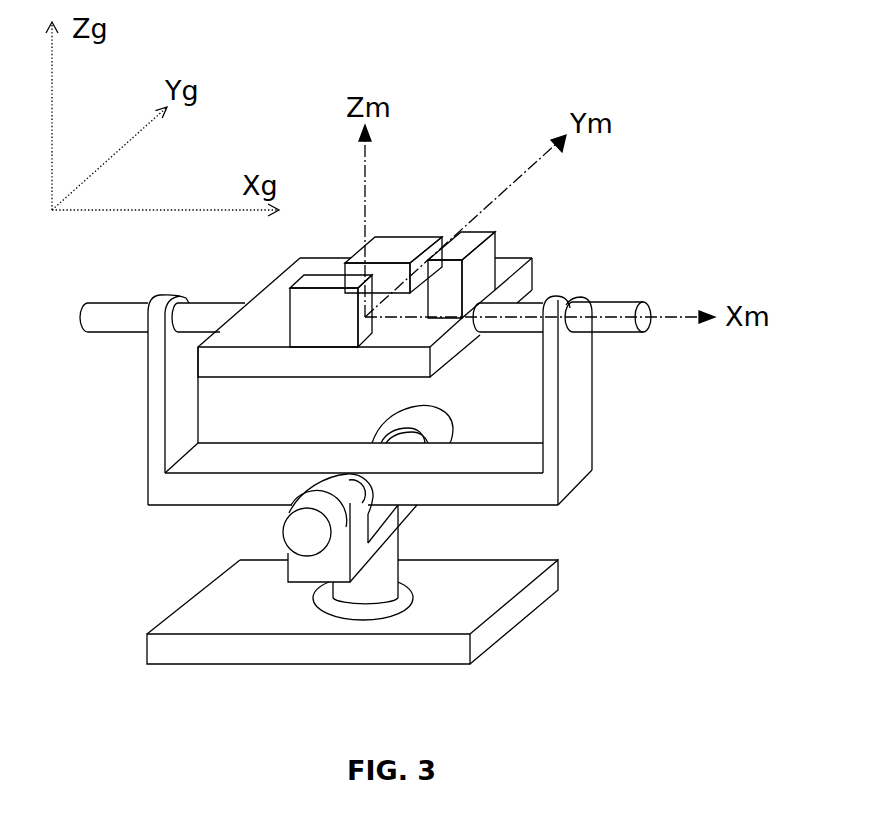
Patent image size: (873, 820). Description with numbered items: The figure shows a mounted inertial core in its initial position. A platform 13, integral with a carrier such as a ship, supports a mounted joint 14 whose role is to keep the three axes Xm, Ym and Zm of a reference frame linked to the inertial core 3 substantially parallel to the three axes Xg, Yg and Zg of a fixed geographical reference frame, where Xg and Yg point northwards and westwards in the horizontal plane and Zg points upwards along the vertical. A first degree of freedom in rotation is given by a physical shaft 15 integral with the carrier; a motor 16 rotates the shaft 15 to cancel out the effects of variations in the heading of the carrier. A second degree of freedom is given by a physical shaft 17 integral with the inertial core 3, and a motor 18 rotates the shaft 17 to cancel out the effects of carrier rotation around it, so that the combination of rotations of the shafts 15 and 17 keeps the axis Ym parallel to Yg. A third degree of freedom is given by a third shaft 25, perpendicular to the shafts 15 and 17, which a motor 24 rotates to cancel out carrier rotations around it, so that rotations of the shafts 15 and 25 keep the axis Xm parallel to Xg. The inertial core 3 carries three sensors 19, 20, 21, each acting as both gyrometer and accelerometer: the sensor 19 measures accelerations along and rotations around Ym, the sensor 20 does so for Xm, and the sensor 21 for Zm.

The inertial core 3 is at (322, 263).
The platform 13 is at (557, 560).
The mounted joint 14 is at (593, 422).
The physical shaft 15 is at (398, 541).
The motor 16 is at (383, 618).
The physical shaft 17 is at (532, 302).
The motor 18 is at (610, 303).
The sensor 19 is at (288, 323).
The sensor 20 is at (497, 245).
The sensor 21 is at (407, 235).
The motor 24 is at (282, 532).
The third shaft 25 is at (352, 480).